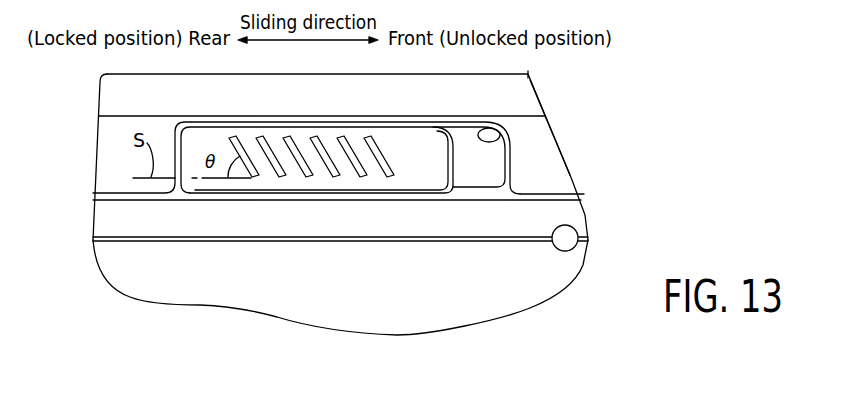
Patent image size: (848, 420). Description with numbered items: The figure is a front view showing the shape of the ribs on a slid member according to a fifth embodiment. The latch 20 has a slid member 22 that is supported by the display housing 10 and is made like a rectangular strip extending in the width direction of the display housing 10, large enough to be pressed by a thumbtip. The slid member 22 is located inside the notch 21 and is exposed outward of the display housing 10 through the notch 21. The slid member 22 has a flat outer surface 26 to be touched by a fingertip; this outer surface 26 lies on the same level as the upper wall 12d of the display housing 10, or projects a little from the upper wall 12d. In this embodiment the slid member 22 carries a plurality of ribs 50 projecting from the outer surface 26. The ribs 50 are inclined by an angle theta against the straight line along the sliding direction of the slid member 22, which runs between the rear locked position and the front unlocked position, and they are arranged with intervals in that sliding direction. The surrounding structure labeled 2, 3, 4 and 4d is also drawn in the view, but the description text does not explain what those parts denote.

The lock device 2 is at (324, 322).
The housing 3 is at (550, 95).
The case 4 is at (553, 278).
The case lower portion 4d is at (147, 282).
The display housing 10 is at (112, 99).
The upper wall 12d is at (568, 176).
The latch 20 is at (330, 124).
The notch 21 is at (500, 134).
The slid member 22 is at (430, 182).
The outer surface 26 is at (413, 147).
The ribs 50 is at (362, 171).